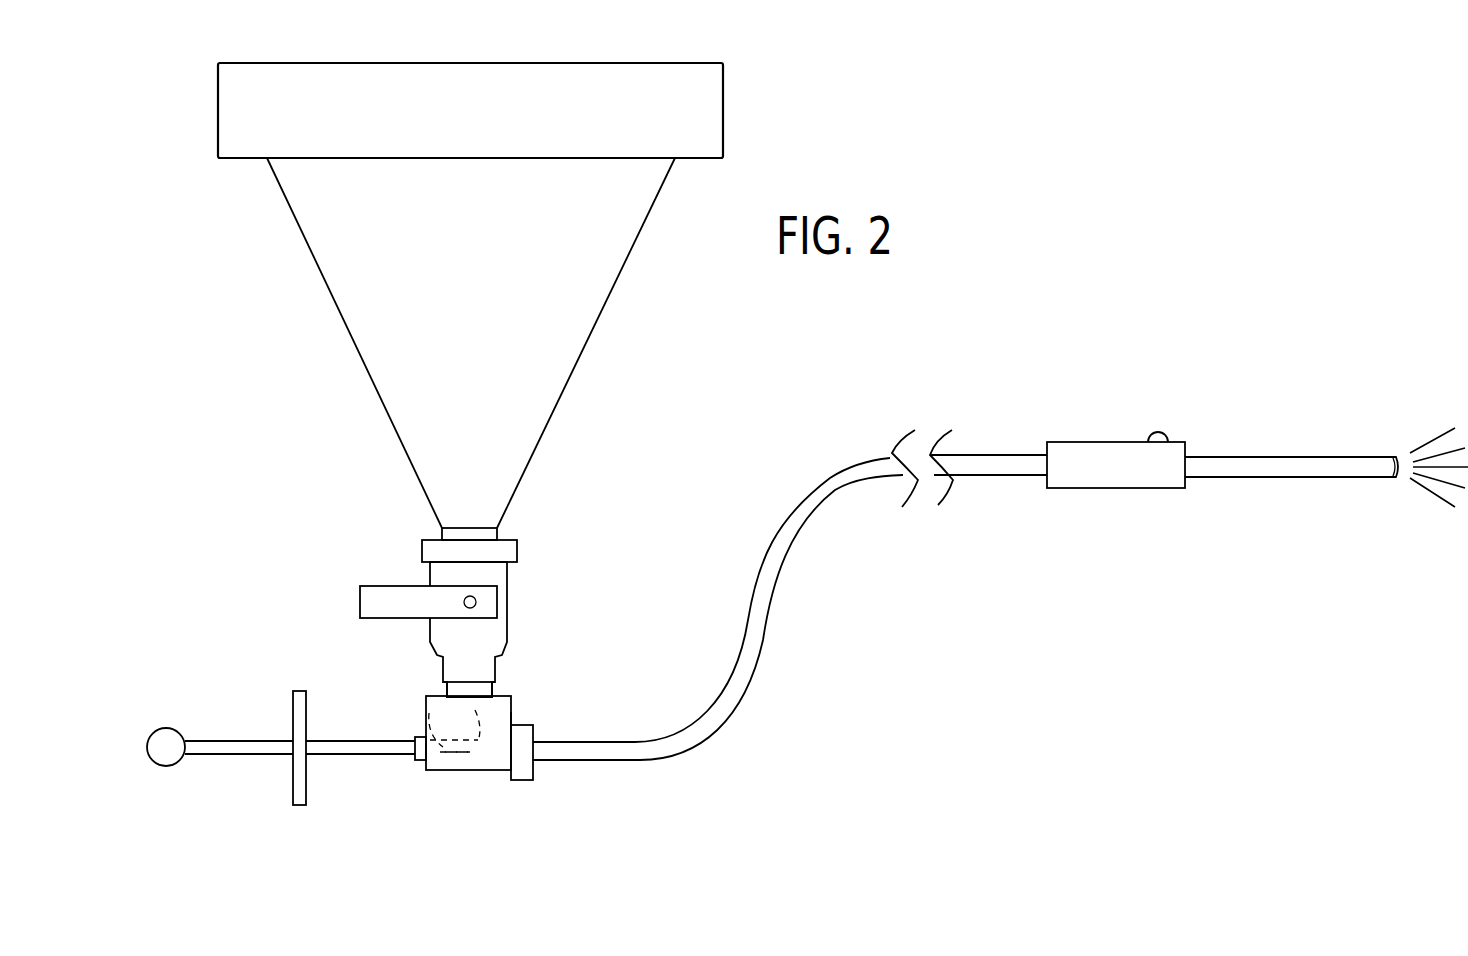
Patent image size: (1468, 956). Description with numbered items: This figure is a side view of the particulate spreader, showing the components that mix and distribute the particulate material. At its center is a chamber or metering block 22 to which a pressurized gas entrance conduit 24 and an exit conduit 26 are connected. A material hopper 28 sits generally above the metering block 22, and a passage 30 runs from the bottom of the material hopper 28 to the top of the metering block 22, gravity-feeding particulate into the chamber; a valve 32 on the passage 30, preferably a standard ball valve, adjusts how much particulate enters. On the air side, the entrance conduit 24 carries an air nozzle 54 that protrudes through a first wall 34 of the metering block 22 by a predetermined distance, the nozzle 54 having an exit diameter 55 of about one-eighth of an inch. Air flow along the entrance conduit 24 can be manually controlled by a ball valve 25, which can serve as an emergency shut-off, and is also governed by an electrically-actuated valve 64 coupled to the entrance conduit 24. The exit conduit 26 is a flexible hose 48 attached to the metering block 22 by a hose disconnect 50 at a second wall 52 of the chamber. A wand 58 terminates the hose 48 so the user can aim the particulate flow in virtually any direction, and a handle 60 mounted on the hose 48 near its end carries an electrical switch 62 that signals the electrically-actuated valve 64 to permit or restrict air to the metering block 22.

The metering block 22 is at (500, 700).
The pressurized gas entrance conduit 24 is at (350, 755).
The ball valve 25 is at (172, 727).
The exit conduit 26 is at (565, 760).
The material hopper 28 is at (548, 402).
The passage 30 is at (497, 578).
The valve 32 is at (386, 597).
The first wall 34 is at (423, 697).
The flexible hose 48 is at (987, 477).
The hose disconnect 50 is at (520, 781).
The second wall 52 is at (513, 712).
The air nozzle 54 is at (429, 713).
The exit diameter 55 is at (480, 720).
The wand 58 is at (1278, 465).
The handle 60 is at (1110, 468).
The electrical switch 62 is at (1160, 433).
The electrically-actuated valve 64 is at (300, 806).